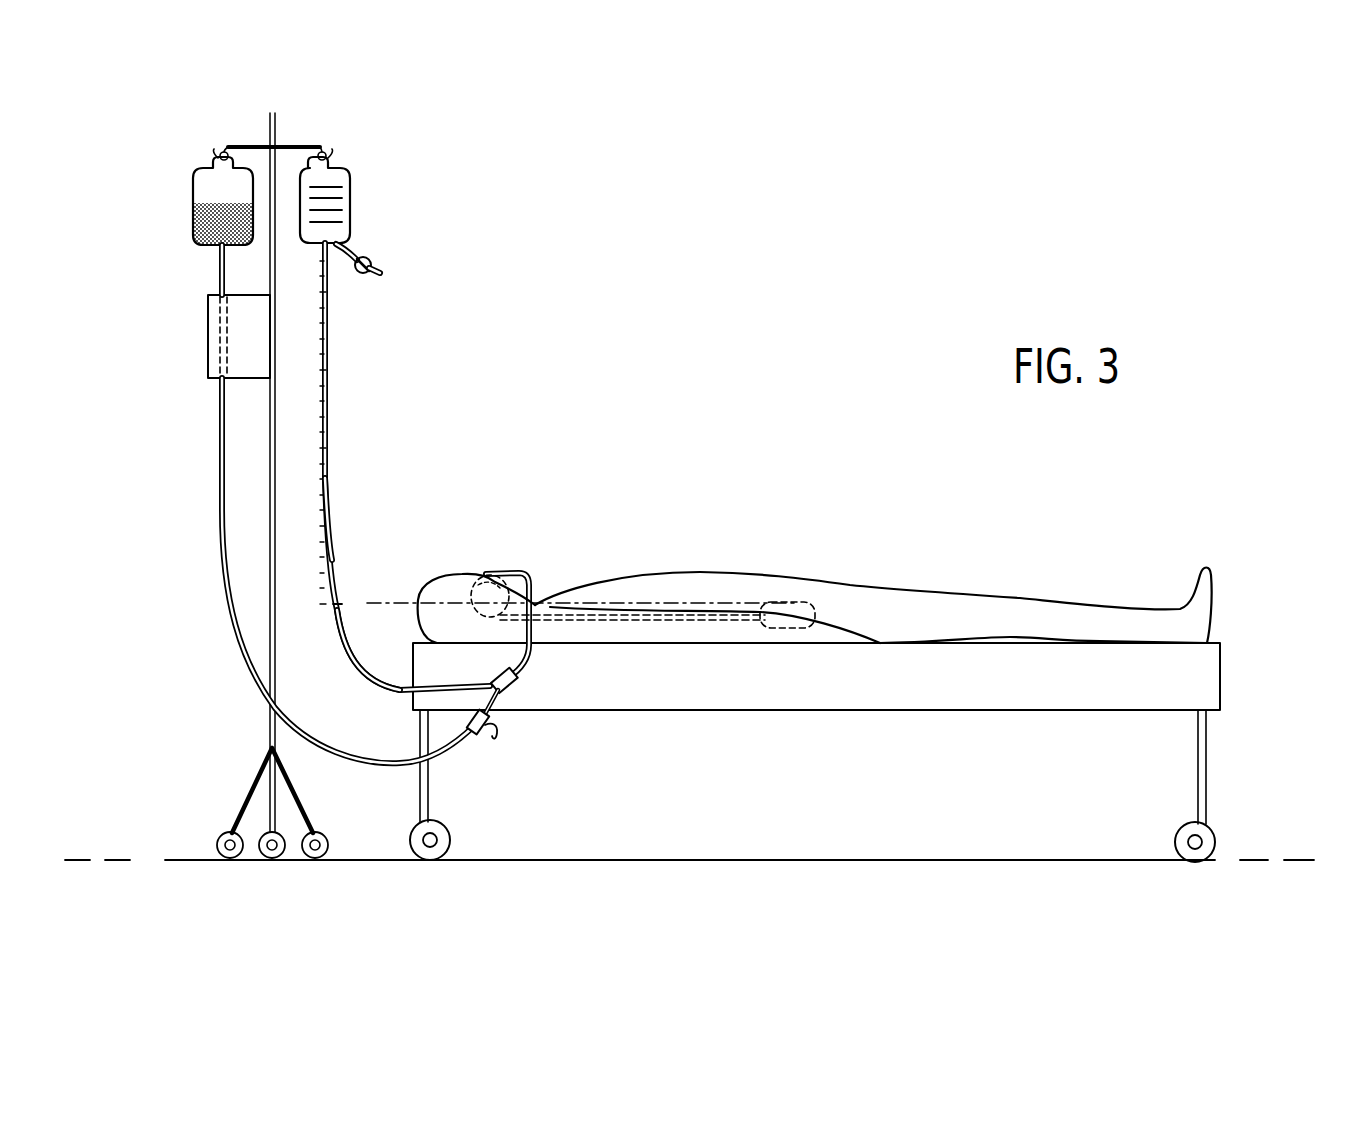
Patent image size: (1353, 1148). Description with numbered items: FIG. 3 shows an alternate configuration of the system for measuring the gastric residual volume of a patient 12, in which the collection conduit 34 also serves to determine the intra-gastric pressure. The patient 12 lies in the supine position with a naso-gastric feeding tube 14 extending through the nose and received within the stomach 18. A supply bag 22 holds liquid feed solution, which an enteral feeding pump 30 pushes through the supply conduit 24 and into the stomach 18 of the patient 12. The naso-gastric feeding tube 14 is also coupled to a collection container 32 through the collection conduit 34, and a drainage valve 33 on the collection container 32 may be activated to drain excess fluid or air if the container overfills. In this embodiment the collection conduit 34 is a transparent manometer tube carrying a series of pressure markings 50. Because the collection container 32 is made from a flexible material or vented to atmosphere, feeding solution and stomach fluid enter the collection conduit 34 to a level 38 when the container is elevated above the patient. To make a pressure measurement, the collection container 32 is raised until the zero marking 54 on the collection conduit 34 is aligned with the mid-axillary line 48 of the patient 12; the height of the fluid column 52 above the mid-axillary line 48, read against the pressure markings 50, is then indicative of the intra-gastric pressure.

The patient 12 is at (703, 573).
The naso-gastric feeding tube 14 is at (507, 575).
The stomach 18 is at (785, 601).
The supply bag 22 is at (193, 171).
The supply conduit 24 is at (222, 524).
The enteral feeding pump 30 is at (208, 338).
The collection container 32 is at (349, 168).
The drainage valve 33 is at (373, 260).
The collection conduit 34 is at (348, 662).
The level 38 is at (328, 462).
The mid-axillary line 48 is at (407, 603).
The series of pressure markings 50 is at (329, 352).
The fluid column 52 is at (323, 523).
The zero marking 54 is at (338, 603).